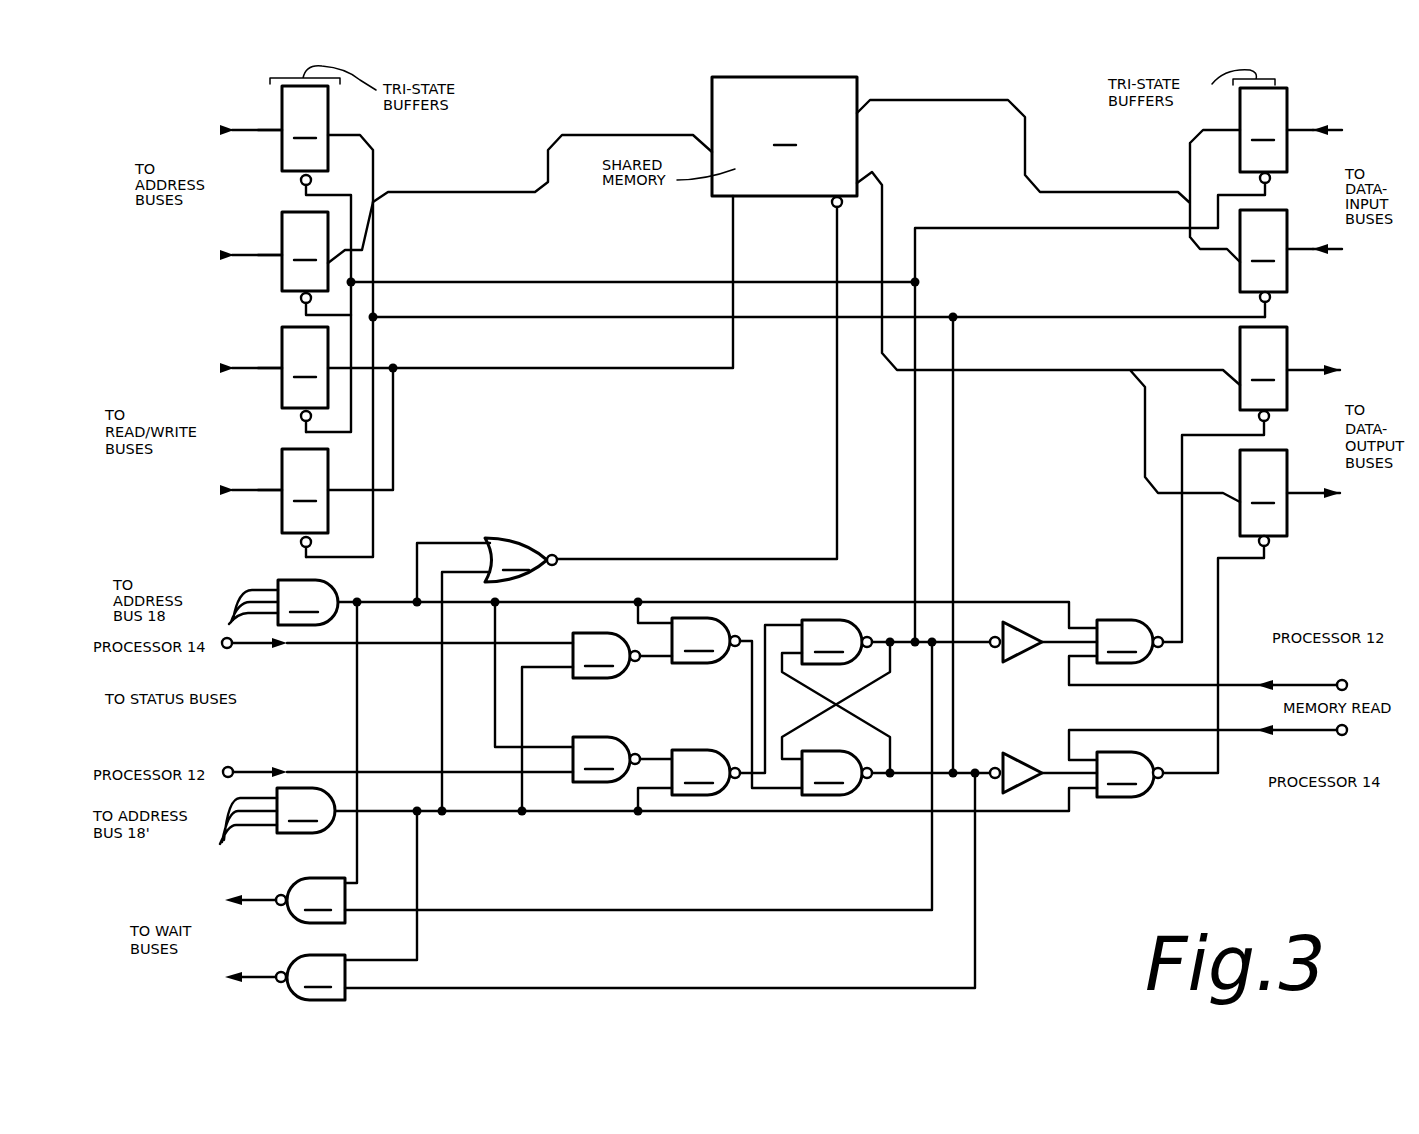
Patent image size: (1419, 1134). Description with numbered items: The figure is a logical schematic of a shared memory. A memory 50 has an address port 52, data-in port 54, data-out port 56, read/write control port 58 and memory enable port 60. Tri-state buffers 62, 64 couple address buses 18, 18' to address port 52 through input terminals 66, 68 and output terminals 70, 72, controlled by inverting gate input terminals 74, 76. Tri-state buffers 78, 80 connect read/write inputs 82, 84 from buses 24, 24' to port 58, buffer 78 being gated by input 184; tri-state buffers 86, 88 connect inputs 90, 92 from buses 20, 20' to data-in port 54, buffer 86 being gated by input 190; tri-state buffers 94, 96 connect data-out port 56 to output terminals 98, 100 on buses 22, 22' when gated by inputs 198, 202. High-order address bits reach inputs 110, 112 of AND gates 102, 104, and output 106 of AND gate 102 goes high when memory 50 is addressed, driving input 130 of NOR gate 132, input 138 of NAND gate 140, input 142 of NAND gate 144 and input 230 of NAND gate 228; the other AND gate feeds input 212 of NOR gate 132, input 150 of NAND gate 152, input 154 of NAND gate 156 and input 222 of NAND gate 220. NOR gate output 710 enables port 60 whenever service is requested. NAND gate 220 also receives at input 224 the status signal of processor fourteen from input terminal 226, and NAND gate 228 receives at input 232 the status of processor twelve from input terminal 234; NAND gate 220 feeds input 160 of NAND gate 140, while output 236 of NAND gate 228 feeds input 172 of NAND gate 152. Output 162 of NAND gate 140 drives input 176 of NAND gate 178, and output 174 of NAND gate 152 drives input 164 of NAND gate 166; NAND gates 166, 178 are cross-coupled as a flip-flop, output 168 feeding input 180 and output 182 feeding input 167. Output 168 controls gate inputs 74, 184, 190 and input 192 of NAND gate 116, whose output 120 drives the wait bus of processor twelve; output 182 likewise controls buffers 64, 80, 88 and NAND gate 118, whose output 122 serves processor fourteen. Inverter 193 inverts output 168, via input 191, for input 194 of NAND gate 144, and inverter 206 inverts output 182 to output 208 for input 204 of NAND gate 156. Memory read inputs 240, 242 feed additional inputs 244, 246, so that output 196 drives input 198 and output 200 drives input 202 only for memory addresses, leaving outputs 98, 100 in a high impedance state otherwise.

The address bus 18 is at (235, 129).
The address bus 18' is at (235, 254).
The data-in bus 20 is at (1342, 132).
The data-in bus 20' is at (1346, 252).
The data-out bus 22 is at (1348, 376).
The data-out bus 22' is at (1351, 494).
The read/write bus 24 is at (234, 367).
The read/write bus 24' is at (232, 491).
The memory 50 is at (784, 136).
The address port 52 is at (710, 148).
The data-in port 54 is at (860, 108).
The data-out port 56 is at (860, 182).
The read/write control port 58 is at (730, 200).
The memory enable port 60 is at (832, 207).
The tri-state buffer 62 is at (305, 128).
The tri-state buffer 64 is at (305, 251).
The input terminal 66 is at (281, 130).
The input terminal 68 is at (281, 253).
The output terminal 70 is at (330, 134).
The output terminal 72 is at (364, 236).
The gate input terminal 74 is at (300, 182).
The gate input terminal 76 is at (300, 299).
The tri-state buffer 78 is at (305, 367).
The tri-state buffer 80 is at (305, 491).
The read/write input 82 is at (281, 366).
The read/write input 84 is at (281, 488).
The tri-state buffer 86 is at (1263, 130).
The tri-state buffer 88 is at (1263, 251).
The input 90 is at (1289, 128).
The input 92 is at (1289, 248).
The tri-state buffer 94 is at (1263, 368).
The tri-state buffer 96 is at (1263, 493).
The output terminal 98 is at (1289, 368).
The output terminal 100 is at (1289, 496).
The AND gate 102 is at (308, 602).
The AND gate 104 is at (306, 810).
The output 106 is at (340, 599).
The inputs 110 is at (247, 592).
The inputs 112 is at (245, 832).
The NAND gate 116 is at (310, 900).
The NAND gate 118 is at (310, 977).
The output 120 is at (278, 905).
The output 122 is at (278, 972).
The input 130 is at (484, 540).
The NOR gate 132 is at (516, 560).
The input 138 is at (671, 624).
The NAND gate 140 is at (706, 640).
The input 142 is at (1094, 620).
The NAND gate 144 is at (1130, 641).
The input 150 is at (672, 787).
The NAND gate 152 is at (706, 772).
The input 154 is at (1096, 777).
The NAND gate 156 is at (1130, 774).
The input 160 is at (673, 661).
The output 162 is at (737, 636).
The input 164 is at (800, 624).
The NAND gate 166 is at (837, 642).
The input 167 is at (806, 665).
The output 168 is at (870, 637).
The input 172 is at (673, 749).
The output 174 is at (737, 767).
The input 176 is at (770, 799).
The NAND gate 178 is at (837, 773).
The input 180 is at (806, 752).
The output 182 is at (870, 778).
The gate input 184 is at (300, 418).
The input 190 is at (1271, 179).
The input 191 is at (993, 647).
The input 192 is at (348, 908).
The inverter 193 is at (1022, 655).
The input 194 is at (1062, 641).
The output 196 is at (1160, 637).
The input 198 is at (1270, 417).
The output 200 is at (1162, 768).
The input 202 is at (1269, 545).
The input 204 is at (1097, 796).
The inverter 206 is at (993, 768).
The output 208 is at (1040, 768).
The input 212 is at (487, 571).
The NAND gate 220 is at (606, 655).
The first input 222 is at (572, 675).
The second input 224 is at (572, 640).
The input terminal 226 is at (230, 649).
The second NAND gate 228 is at (606, 759).
The first input 230 is at (572, 741).
The second input 232 is at (572, 778).
The input terminal 234 is at (232, 767).
The NAND gate output 236 is at (637, 752).
The memory read input 240 is at (1338, 681).
The memory read input 242 is at (1338, 735).
The additional input 244 is at (1100, 664).
The additional input 246 is at (1097, 758).
The NOR gate output 710 is at (557, 555).